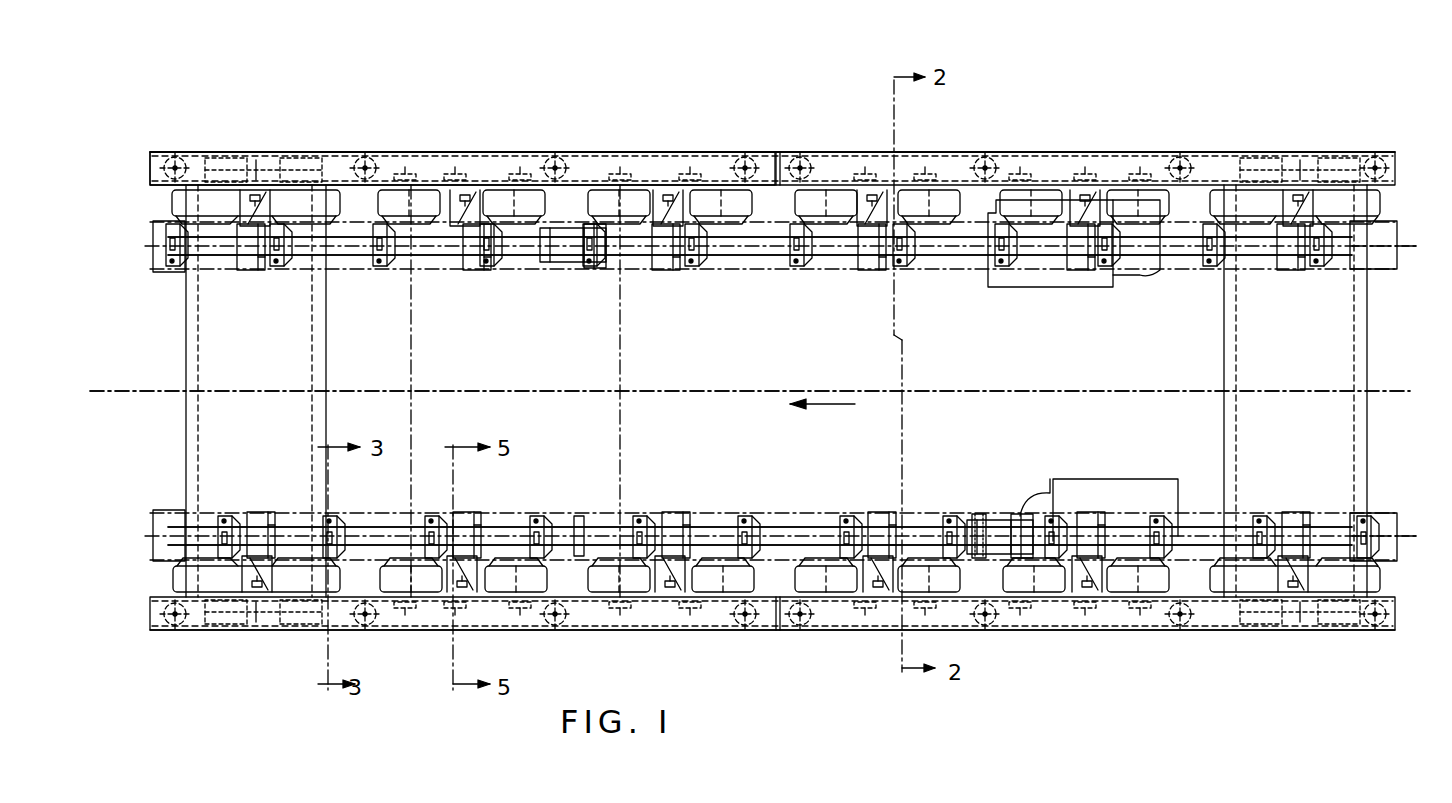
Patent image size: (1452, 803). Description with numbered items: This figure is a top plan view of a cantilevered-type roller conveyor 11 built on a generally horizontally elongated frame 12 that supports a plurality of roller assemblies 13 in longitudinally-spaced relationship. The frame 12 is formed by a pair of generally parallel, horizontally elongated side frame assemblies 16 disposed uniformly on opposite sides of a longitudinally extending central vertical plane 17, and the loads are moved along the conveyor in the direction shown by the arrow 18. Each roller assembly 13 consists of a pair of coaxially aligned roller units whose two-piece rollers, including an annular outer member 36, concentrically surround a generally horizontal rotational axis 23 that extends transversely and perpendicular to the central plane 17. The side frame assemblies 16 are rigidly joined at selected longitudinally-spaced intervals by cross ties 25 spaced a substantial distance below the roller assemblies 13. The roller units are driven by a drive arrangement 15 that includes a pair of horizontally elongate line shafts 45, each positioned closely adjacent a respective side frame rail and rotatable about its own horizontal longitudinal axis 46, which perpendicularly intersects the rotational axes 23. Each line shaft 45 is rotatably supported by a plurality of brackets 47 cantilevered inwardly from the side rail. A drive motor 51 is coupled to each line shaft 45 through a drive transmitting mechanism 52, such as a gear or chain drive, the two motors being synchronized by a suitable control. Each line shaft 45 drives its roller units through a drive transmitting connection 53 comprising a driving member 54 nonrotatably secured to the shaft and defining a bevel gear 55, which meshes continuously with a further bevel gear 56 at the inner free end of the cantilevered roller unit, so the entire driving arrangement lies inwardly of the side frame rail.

The cantilevered-type roller conveyor 11 is at (642, 78).
The frame 12 is at (447, 146).
The roller assembly 13 is at (216, 492).
The drive arrangement 15 is at (1070, 478).
The side frame assembly 16 is at (594, 160).
The central vertical plane 17 is at (712, 388).
The arrow 18 is at (823, 404).
The rotational axis 23 is at (412, 342).
The cross tie 25 is at (302, 344).
The outer member 36 is at (838, 190).
The line shaft 45 is at (752, 256).
The axis 46 is at (1420, 246).
The bracket 47 is at (250, 270).
The drive motor 51 is at (1065, 290).
The drive transmitting mechanism 52 is at (990, 520).
The drive transmitting connection 53 is at (937, 520).
The driving member 54 is at (580, 520).
The bevel gear 55 is at (803, 264).
The further bevel gear 56 is at (840, 268).